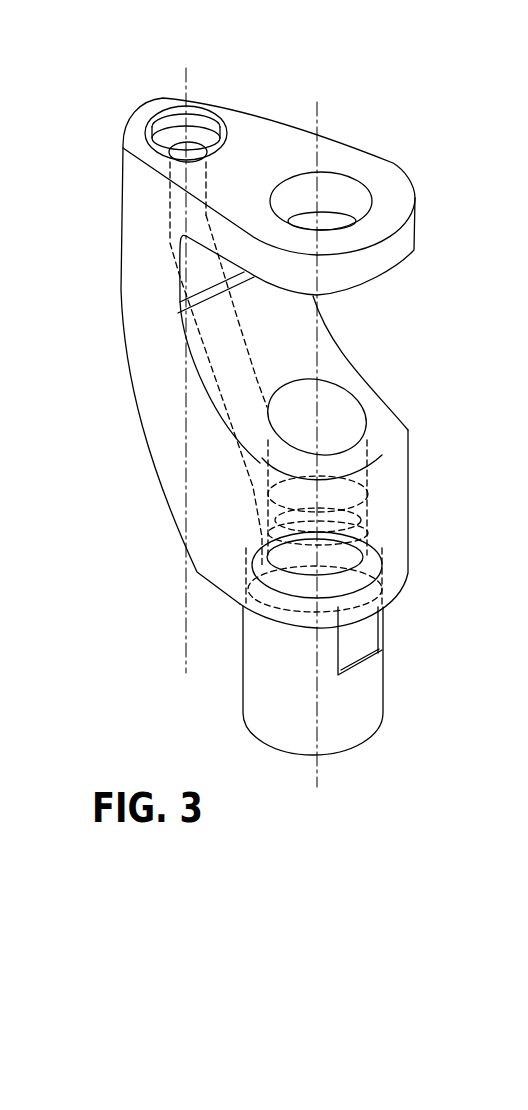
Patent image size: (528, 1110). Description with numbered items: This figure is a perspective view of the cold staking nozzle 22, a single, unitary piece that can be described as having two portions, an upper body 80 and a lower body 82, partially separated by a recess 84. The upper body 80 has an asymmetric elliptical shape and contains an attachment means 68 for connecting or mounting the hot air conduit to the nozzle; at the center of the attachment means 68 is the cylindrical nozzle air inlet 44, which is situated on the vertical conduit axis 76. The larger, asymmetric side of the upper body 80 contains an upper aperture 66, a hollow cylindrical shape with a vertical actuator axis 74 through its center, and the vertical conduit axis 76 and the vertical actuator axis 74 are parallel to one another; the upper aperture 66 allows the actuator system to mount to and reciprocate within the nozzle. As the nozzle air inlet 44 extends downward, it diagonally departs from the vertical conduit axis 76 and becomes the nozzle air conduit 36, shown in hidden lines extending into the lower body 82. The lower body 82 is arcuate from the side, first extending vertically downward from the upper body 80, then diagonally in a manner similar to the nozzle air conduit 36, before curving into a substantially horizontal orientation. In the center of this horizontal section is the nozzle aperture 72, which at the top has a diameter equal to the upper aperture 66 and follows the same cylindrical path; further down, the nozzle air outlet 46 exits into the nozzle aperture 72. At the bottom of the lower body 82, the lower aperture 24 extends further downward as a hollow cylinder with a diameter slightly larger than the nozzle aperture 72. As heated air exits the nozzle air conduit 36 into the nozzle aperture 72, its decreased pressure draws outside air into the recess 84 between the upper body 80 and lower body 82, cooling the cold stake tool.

The cold staking nozzle 22 is at (68, 129).
The lower aperture 24 is at (376, 693).
The nozzle air conduit 36 is at (217, 375).
The nozzle air inlet 44 is at (178, 152).
The nozzle air outlet 46 is at (290, 462).
The upper aperture 66 is at (342, 195).
The attachment means 68 is at (210, 130).
The nozzle aperture 72 is at (327, 405).
The vertical actuator axis 74 is at (319, 130).
The vertical conduit axis 76 is at (186, 595).
The upper body 80 is at (414, 197).
The lower body 82 is at (410, 493).
The recess 84 is at (390, 324).